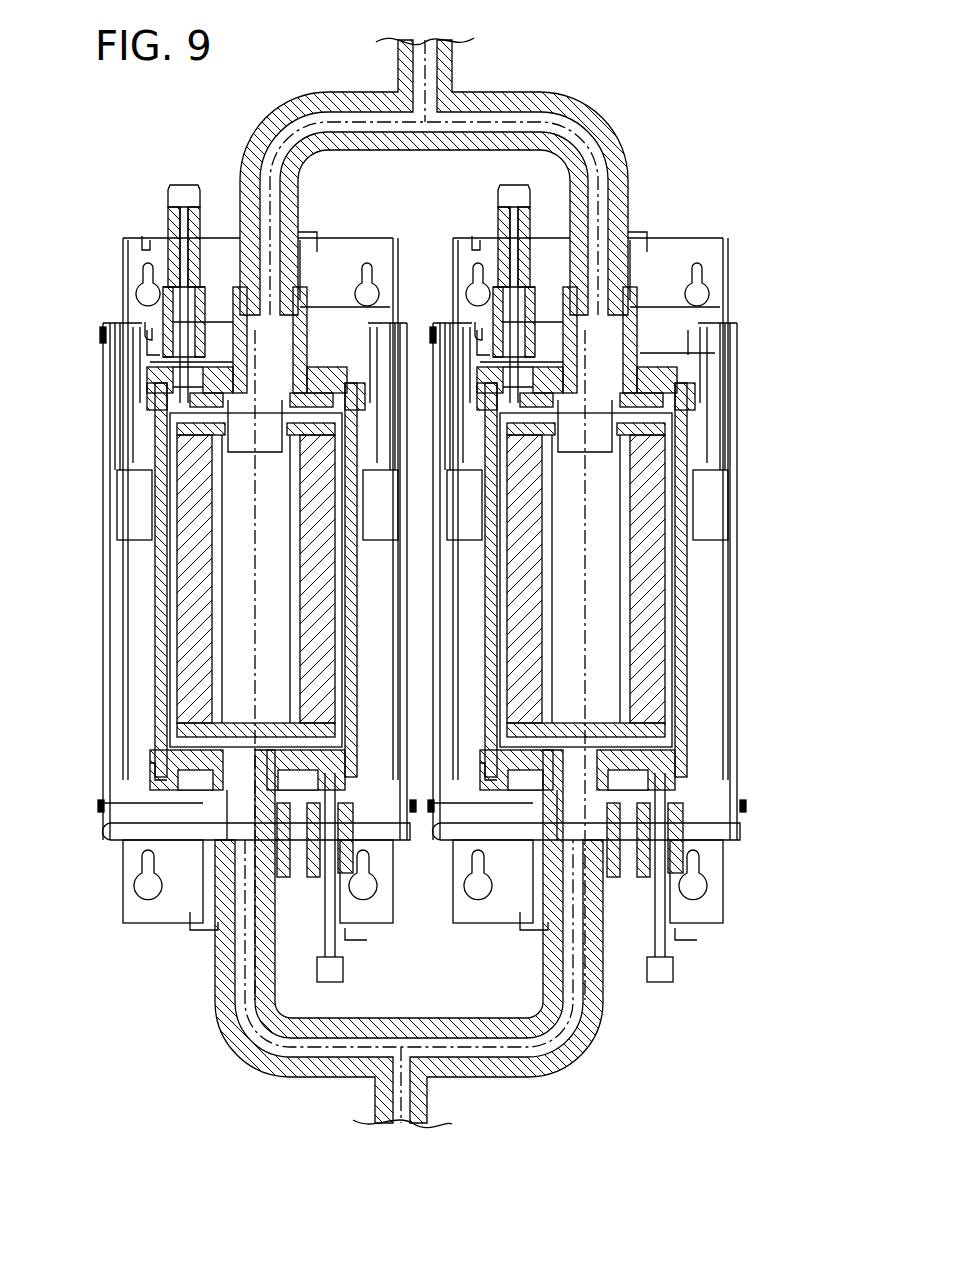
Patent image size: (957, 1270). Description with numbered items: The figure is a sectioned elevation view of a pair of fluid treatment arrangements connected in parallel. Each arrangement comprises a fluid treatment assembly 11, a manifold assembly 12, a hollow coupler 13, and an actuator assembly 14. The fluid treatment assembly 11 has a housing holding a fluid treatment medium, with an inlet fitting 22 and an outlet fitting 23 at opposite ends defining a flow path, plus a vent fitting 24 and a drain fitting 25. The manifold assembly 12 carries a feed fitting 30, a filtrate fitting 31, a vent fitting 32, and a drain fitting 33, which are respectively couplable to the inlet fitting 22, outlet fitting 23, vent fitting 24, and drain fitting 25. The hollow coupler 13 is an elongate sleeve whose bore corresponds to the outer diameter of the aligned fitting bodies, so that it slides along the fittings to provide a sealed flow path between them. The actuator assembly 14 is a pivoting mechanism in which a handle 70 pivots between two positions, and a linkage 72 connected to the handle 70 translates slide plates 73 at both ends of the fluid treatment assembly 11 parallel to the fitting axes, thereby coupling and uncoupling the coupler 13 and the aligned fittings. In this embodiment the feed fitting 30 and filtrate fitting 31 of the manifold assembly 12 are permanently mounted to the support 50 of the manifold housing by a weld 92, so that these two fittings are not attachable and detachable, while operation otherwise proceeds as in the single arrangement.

The fluid treatment assembly 11 is at (160, 638).
The manifold assembly 12 is at (128, 248).
The hollow coupler 13 is at (140, 288).
The actuator assembly 14 is at (106, 434).
The inlet fitting 22 is at (195, 790).
The outlet fitting 23 is at (716, 355).
The vent fitting 24 is at (146, 356).
The drain fitting 25 is at (320, 836).
The feed fitting 30 is at (228, 950).
The filtrate fitting 31 is at (310, 258).
The vent fitting 32 is at (143, 238).
The drain fitting 33 is at (362, 945).
The support 50 is at (226, 192).
The handle 70 is at (135, 502).
The linkage 72 is at (118, 386).
The slide plates 73 is at (218, 320).
The weld 92 is at (305, 228).